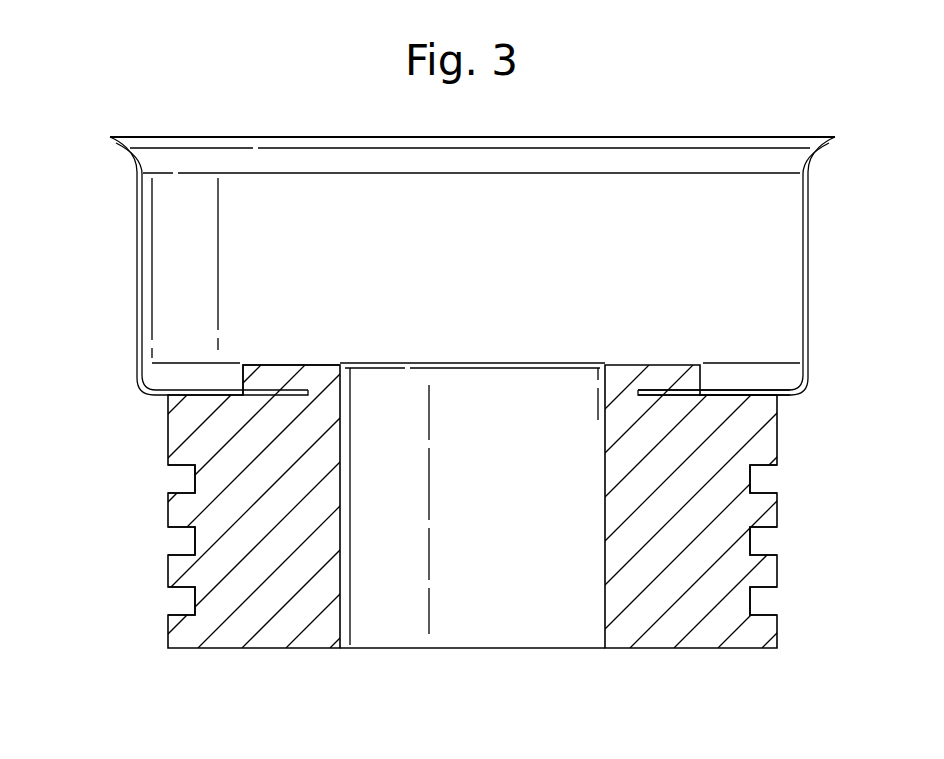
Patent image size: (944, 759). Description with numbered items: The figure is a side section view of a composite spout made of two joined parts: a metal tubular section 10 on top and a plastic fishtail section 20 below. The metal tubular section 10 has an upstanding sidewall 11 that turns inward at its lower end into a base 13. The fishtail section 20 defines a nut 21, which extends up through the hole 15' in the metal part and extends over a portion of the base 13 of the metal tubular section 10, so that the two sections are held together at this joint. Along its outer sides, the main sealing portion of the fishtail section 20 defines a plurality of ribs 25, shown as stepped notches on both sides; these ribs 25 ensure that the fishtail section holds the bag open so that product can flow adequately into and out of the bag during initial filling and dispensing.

The metal tubular section 10 is at (110, 134).
The sidewall 11 is at (808, 257).
The base 13 is at (730, 390).
The plastic fishtail section 20 is at (472, 510).
The nut 21 is at (272, 363).
The hole 15' is at (472, 469).
The ribs 25 is at (156, 437).